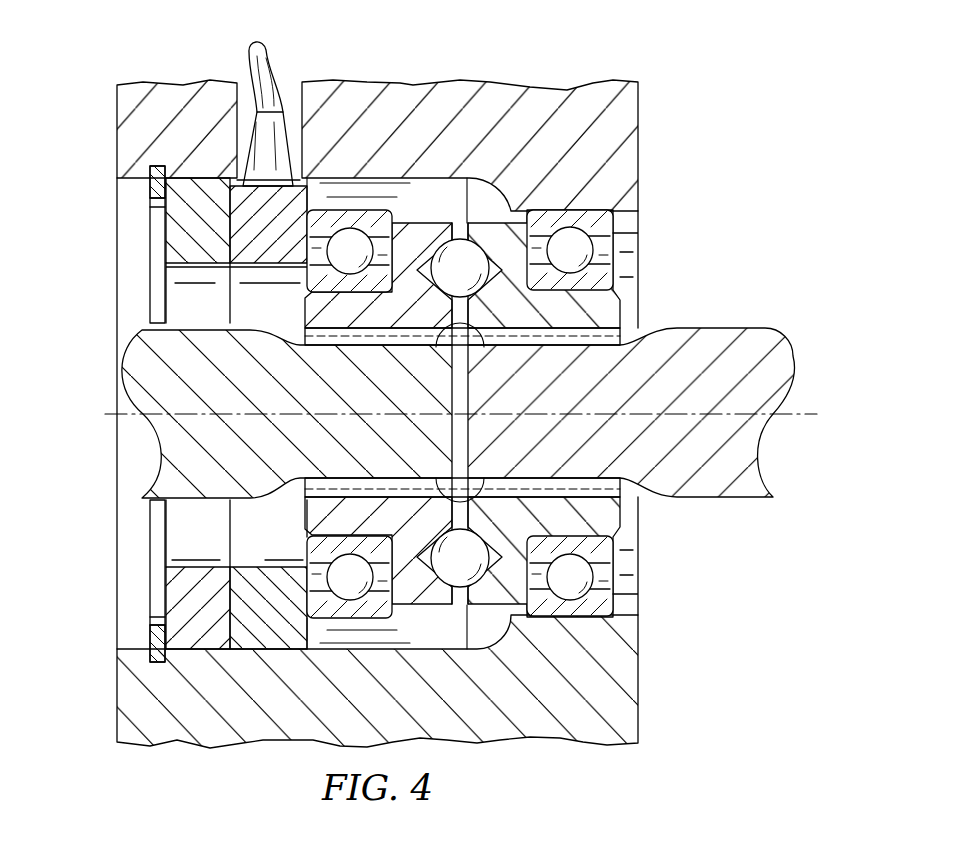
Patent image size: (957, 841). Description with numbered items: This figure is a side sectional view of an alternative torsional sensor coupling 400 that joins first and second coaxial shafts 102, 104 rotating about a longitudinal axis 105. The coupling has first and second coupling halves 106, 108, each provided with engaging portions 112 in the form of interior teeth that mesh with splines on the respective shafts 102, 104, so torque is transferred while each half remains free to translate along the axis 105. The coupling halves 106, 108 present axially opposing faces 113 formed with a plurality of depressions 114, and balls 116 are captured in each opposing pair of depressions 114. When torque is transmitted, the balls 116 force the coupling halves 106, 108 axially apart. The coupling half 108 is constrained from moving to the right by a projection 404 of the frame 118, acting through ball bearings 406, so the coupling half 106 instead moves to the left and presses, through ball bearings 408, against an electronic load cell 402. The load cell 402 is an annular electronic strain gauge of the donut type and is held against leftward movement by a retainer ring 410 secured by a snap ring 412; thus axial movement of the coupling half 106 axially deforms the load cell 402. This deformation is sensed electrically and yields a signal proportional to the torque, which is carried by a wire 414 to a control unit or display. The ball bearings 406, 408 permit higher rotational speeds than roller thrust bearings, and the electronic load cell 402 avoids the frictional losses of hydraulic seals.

The first coaxial shaft 102 is at (196, 307).
The second coaxial shaft 104 is at (751, 500).
The longitudinal axis 105 is at (800, 416).
The first coupling half 106 is at (310, 312).
The second coupling half 108 is at (613, 517).
The engaging portions 112 is at (358, 484).
The axially opposing faces 113 is at (445, 312).
The depressions 114 is at (432, 540).
The balls 116 is at (442, 257).
The frame 118 is at (116, 141).
The alternative coupling 400 is at (690, 298).
The electronic load cell 402 is at (253, 573).
The projection 404 is at (640, 243).
The ball bearings 406 is at (572, 240).
The ball bearings 408 is at (362, 631).
The retainer ring 410 is at (175, 228).
The snap ring 412 is at (160, 640).
The wire 414 is at (282, 63).